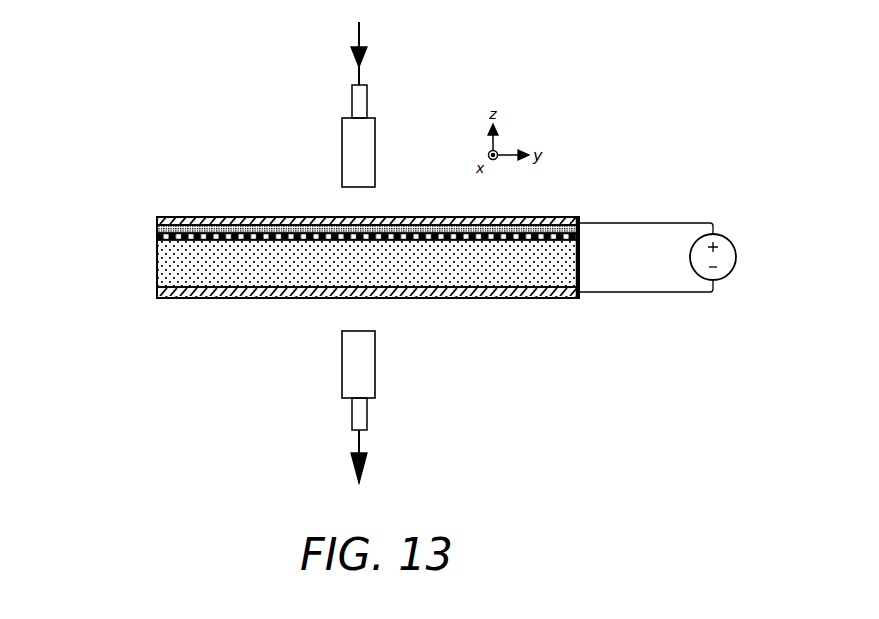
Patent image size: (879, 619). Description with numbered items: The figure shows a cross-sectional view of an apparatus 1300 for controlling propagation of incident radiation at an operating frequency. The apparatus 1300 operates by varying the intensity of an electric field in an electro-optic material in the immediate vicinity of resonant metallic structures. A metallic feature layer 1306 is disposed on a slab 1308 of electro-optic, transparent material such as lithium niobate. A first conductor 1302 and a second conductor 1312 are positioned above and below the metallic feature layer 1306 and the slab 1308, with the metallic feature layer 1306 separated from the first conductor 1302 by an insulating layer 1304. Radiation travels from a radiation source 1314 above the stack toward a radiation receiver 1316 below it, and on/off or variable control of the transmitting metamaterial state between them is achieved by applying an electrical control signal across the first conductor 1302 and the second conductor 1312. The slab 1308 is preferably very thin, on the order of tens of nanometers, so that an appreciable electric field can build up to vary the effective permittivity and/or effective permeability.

The apparatus 1300 is at (123, 102).
The first conductor 1302 is at (157, 221).
The insulating layer 1304 is at (157, 230).
The metallic feature layer 1306 is at (157, 238).
The slab 1308 is at (157, 262).
The second conductor 1312 is at (157, 293).
The radiation source 1314 is at (342, 151).
The radiation receiver 1316 is at (342, 362).